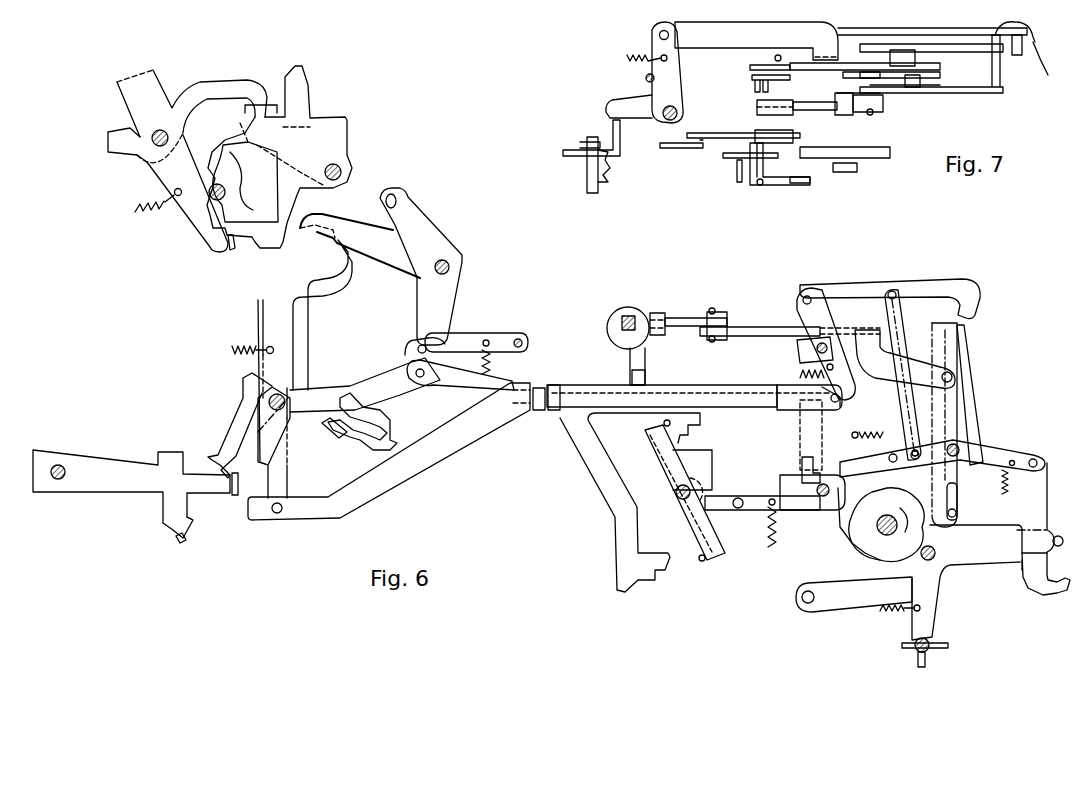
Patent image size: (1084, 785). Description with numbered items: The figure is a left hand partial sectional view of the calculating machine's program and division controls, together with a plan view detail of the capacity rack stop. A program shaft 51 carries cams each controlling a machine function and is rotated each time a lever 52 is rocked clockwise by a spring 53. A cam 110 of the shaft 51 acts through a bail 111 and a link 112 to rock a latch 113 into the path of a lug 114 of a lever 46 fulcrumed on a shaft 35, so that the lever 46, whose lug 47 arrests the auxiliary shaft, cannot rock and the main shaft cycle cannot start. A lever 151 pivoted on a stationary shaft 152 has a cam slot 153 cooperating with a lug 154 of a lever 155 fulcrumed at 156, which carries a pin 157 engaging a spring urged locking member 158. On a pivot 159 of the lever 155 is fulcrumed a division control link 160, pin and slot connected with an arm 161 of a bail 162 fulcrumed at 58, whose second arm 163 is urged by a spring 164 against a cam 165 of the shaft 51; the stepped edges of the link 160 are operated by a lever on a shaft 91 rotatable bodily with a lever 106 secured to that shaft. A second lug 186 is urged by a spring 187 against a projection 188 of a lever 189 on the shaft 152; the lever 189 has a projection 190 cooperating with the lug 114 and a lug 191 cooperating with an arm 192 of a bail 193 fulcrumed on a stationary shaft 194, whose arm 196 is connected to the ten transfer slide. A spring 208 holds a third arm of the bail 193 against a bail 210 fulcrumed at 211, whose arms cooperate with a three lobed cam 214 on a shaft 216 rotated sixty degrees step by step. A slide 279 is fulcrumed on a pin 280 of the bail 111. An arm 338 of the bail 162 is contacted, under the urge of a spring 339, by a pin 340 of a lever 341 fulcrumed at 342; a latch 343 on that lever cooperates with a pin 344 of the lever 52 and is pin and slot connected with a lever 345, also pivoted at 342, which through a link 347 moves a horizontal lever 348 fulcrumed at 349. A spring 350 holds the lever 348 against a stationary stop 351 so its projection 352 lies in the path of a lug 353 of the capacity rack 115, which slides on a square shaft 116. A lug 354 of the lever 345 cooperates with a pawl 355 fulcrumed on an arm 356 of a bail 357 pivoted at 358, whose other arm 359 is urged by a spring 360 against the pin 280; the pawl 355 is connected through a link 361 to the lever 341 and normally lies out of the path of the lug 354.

In FIG. 6, the shaft 35 is at (60, 465).
In FIG. 6, the lever 46 is at (128, 462).
In FIG. 6, the lug 47 is at (187, 540).
In FIG. 6, the program shaft 51 is at (878, 526).
In FIG. 7, the program shaft 51 is at (850, 172).
In FIG. 6, the program control lever 52 is at (960, 560).
In FIG. 7, the program control lever 52 is at (1034, 40).
In FIG. 6, the spring 53 is at (890, 613).
In FIG. 6, the fulcrum pivot 58 is at (820, 496).
In FIG. 7, the fulcrum pivot 58 is at (795, 136).
In FIG. 6, the shaft 91 is at (677, 494).
In FIG. 6, the lever 106 is at (702, 540).
In FIG. 6, the cam 110 is at (900, 500).
In FIG. 7, the cam 110 is at (870, 158).
In FIG. 6, the bail 111 is at (790, 475).
In FIG. 7, the bail 111 is at (737, 178).
In FIG. 6, the link 112 is at (398, 476).
In FIG. 6, the latch 113 is at (284, 472).
In FIG. 6, the lug 114 is at (233, 495).
In FIG. 6, the capacity rack 115 is at (630, 376).
In FIG. 7, the capacity rack 115 is at (606, 176).
In FIG. 7, the square shaft 116 is at (587, 165).
In FIG. 6, the lever 151 is at (328, 388).
In FIG. 6, the stationary shaft 152 is at (282, 394).
In FIG. 6, the cam slot 153 is at (385, 420).
In FIG. 6, the lug 154 is at (338, 410).
In FIG. 6, the lever 155 is at (450, 302).
In FIG. 6, the fulcrum 156 is at (450, 264).
In FIG. 6, the pin 157 is at (415, 352).
In FIG. 6, the locking member 158 is at (505, 333).
In FIG. 6, the pivot 159 is at (415, 368).
In FIG. 6, the division control link 160 is at (556, 412).
In FIG. 7, the division control link 160 is at (662, 148).
In FIG. 6, the arm 161 is at (760, 495).
In FIG. 7, the arm 161 is at (708, 133).
In FIG. 6, the bail 162 is at (803, 458).
In FIG. 7, the bail 162 is at (757, 112).
In FIG. 6, the arm 163 is at (820, 525).
In FIG. 6, the spring 164 is at (766, 533).
In FIG. 6, the cam 165 is at (850, 566).
In FIG. 7, the cam 165 is at (900, 95).
In FIG. 6, the lug 186 is at (303, 240).
In FIG. 6, the spring 187 is at (244, 344).
In FIG. 6, the projection 188 is at (346, 254).
In FIG. 6, the lever 189 is at (293, 330).
In FIG. 6, the projection 190 is at (218, 458).
In FIG. 6, the lug 191 is at (233, 250).
In FIG. 6, the arm 192 is at (212, 250).
In FIG. 6, the bail 193 is at (155, 70).
In FIG. 6, the stationary shaft 194 is at (155, 153).
In FIG. 6, the arm 196 is at (122, 130).
In FIG. 6, the spring 208 is at (150, 214).
In FIG. 6, the bail 210 is at (330, 122).
In FIG. 6, the pivot 211 is at (342, 172).
In FIG. 6, the three lobed cam 214 is at (232, 196).
In FIG. 6, the shaft 216 is at (628, 315).
In FIG. 6, the slide 279 is at (522, 384).
In FIG. 7, the slide 279 is at (722, 157).
In FIG. 6, the pin 280 is at (818, 402).
In FIG. 7, the pin 280 is at (810, 180).
In FIG. 6, the arm 338 is at (880, 437).
In FIG. 6, the spring 339 is at (1000, 482).
In FIG. 7, the spring 339 is at (868, 112).
In FIG. 6, the pin 340 is at (895, 455).
In FIG. 7, the pin 340 is at (872, 110).
In FIG. 6, the lever 341 is at (990, 455).
In FIG. 7, the lever 341 is at (958, 93).
In FIG. 6, the pivot 342 is at (956, 445).
In FIG. 7, the pivot 342 is at (925, 90).
In FIG. 6, the latch 343 is at (1045, 590).
In FIG. 7, the latch 343 is at (1046, 74).
In FIG. 6, the pin 344 is at (1052, 545).
In FIG. 7, the pin 344 is at (1017, 56).
In FIG. 6, the lever 345 is at (962, 395).
In FIG. 7, the lever 345 is at (935, 52).
In FIG. 6, the link 347 is at (760, 327).
In FIG. 7, the link 347 is at (730, 42).
In FIG. 6, the horizontal lever 348 is at (683, 318).
In FIG. 7, the horizontal lever 348 is at (678, 75).
In FIG. 6, the fulcrum 349 is at (715, 314).
In FIG. 7, the fulcrum 349 is at (663, 118).
In FIG. 7, the spring 350 is at (641, 43).
In FIG. 7, the stationary stop 351 is at (646, 78).
In FIG. 7, the projection 352 is at (612, 104).
In FIG. 6, the lug 353 is at (655, 335).
In FIG. 7, the lug 353 is at (612, 124).
In FIG. 6, the lug 354 is at (950, 327).
In FIG. 7, the lug 354 is at (893, 55).
In FIG. 6, the pawl 355 is at (925, 284).
In FIG. 7, the pawl 355 is at (930, 76).
In FIG. 6, the arm 356 is at (822, 320).
In FIG. 7, the arm 356 is at (795, 112).
In FIG. 6, the bail 357 is at (797, 350).
In FIG. 7, the bail 357 is at (752, 85).
In FIG. 6, the pivot 358 is at (806, 375).
In FIG. 7, the pivot 358 is at (770, 60).
In FIG. 6, the arm 359 is at (840, 396).
In FIG. 6, the spring 360 is at (798, 378).
In FIG. 6, the link 361 is at (900, 326).
In FIG. 7, the link 361 is at (841, 75).